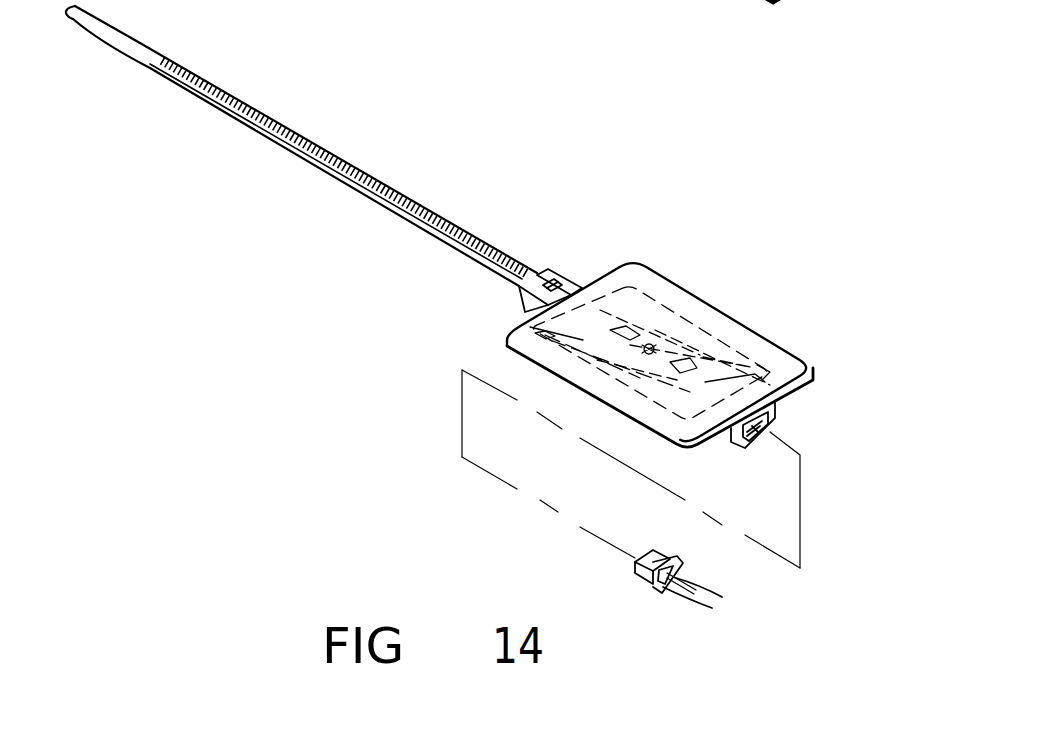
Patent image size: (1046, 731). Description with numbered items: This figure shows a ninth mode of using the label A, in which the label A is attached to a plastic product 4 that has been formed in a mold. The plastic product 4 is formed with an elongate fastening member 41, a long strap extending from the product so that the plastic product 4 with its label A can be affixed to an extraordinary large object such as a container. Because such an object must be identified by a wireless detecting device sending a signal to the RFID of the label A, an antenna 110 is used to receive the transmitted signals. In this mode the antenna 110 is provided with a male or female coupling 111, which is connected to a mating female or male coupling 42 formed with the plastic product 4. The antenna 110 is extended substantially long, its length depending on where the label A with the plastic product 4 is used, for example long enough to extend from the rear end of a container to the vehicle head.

The plastic product 4 is at (717, 318).
The elongate fastening member 41 is at (337, 152).
The female or male coupling 42 is at (750, 444).
The label A is at (737, 353).
The antenna 110 is at (708, 591).
The male or female coupling 111 is at (650, 551).